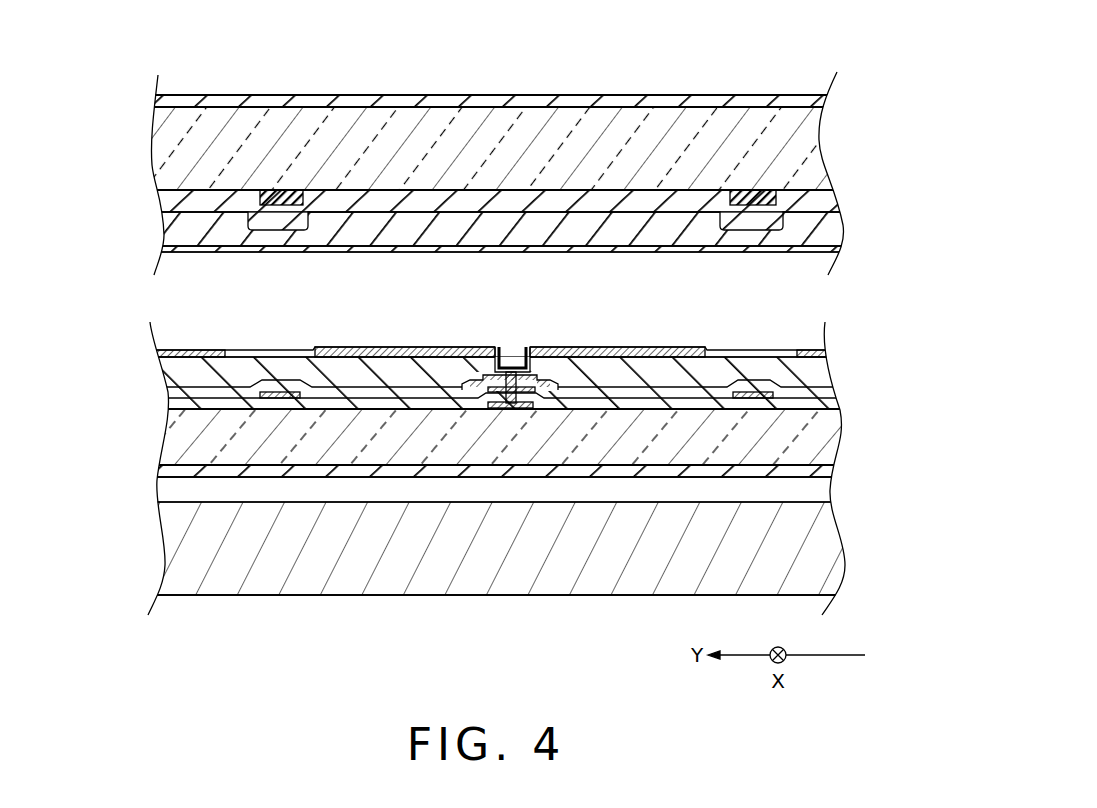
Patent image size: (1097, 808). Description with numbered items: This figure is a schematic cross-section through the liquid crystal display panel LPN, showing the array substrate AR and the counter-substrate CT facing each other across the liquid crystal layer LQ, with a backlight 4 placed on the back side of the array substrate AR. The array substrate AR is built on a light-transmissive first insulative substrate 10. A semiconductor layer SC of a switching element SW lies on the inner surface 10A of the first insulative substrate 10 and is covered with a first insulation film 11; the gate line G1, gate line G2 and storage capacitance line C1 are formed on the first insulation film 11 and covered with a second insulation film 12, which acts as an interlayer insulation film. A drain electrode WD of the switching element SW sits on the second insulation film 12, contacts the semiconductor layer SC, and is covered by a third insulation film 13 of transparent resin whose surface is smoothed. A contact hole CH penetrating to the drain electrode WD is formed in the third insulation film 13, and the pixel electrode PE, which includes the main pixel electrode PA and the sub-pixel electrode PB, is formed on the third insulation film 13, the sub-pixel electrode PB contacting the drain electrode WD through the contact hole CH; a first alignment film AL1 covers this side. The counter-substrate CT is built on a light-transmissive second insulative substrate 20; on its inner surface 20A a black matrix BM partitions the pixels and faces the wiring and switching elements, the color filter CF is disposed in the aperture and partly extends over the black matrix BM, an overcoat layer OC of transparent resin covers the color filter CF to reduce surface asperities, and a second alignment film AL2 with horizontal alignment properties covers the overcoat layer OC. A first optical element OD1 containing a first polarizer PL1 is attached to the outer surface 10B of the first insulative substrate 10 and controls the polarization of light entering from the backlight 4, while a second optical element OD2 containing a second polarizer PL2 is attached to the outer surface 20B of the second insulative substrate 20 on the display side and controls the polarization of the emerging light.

The liquid crystal display panel LPN is at (808, 62).
The counter-substrate CT is at (148, 167).
The array substrate AR is at (158, 432).
The liquid crystal layer LQ is at (163, 340).
The second optical element OD2 is at (158, 100).
The second polarizer PL2 is at (464, 115).
The first optical element OD1 is at (158, 470).
The first polarizer PL1 is at (463, 484).
The second insulative substrate 20 is at (820, 132).
The inner surface of second insulative substrate 20A is at (205, 198).
The outer surface of second insulative substrate 20B is at (226, 95).
The first insulative substrate 10 is at (828, 443).
The inner surface of first insulative substrate 10A is at (180, 379).
The outer surface of first insulative substrate 10B is at (208, 473).
The black matrix BM is at (277, 190).
The color filter CF is at (383, 190).
The overcoat layer OC is at (828, 231).
The second alignment film AL2 is at (826, 253).
The first alignment film AL1 is at (823, 348).
The first insulation film 11 is at (835, 408).
The second insulation film 12 is at (830, 396).
The third insulation film 13 is at (818, 375).
The gate line G1 is at (270, 392).
The gate line G2 is at (748, 392).
The pixel electrode PE is at (658, 343).
The main pixel electrode PA is at (363, 349).
The sub-pixel electrode PB is at (522, 362).
The contact hole CH is at (507, 365).
The drain electrode WD is at (558, 372).
The switching element SW is at (509, 420).
The semiconductor layer SC is at (540, 410).
The storage capacitance line C1 is at (482, 405).
The backlight 4 is at (165, 568).